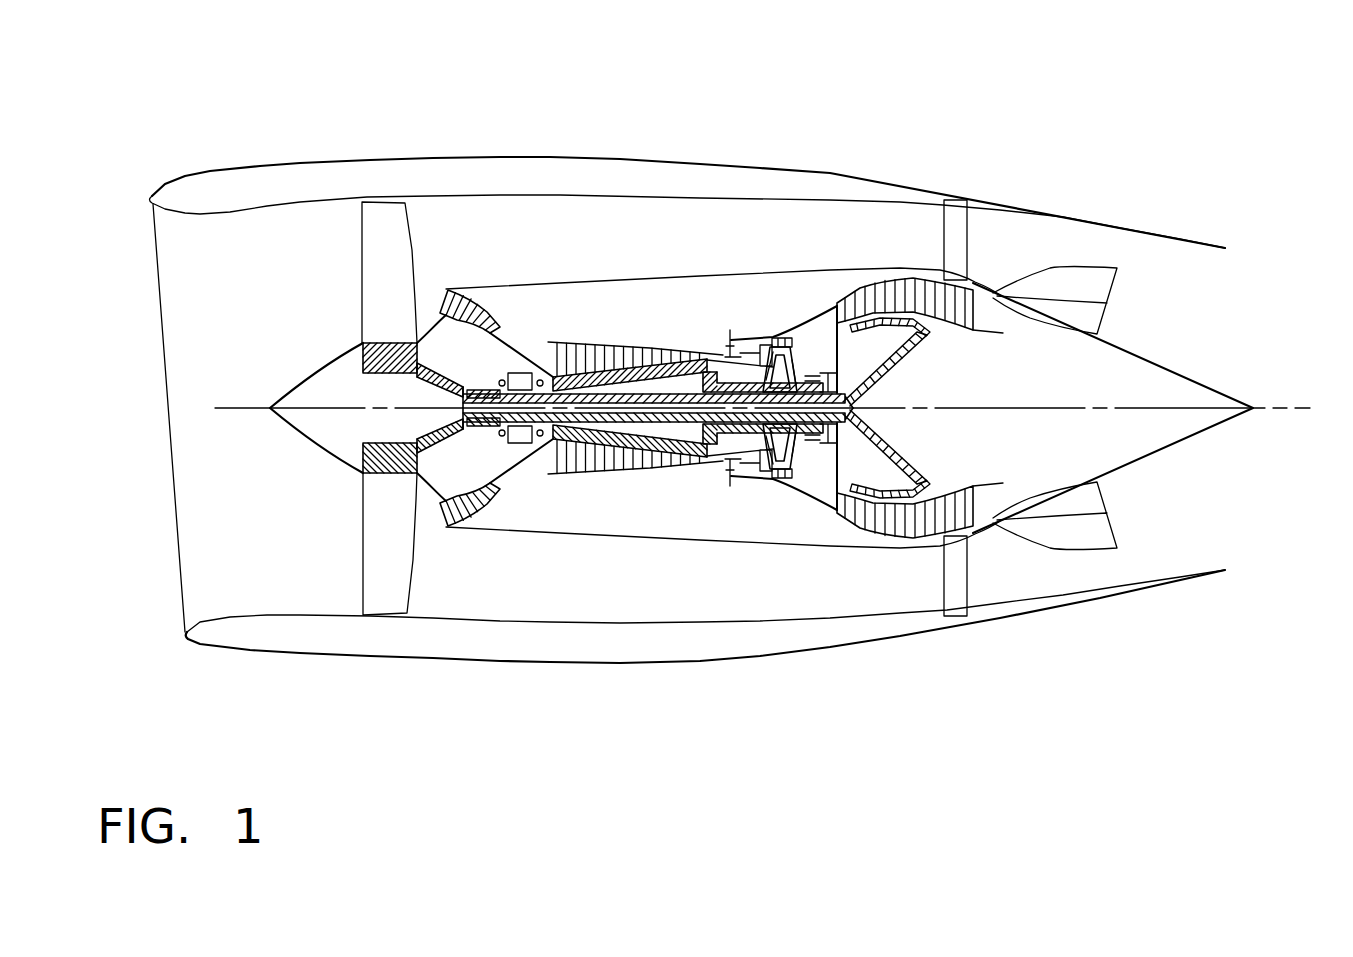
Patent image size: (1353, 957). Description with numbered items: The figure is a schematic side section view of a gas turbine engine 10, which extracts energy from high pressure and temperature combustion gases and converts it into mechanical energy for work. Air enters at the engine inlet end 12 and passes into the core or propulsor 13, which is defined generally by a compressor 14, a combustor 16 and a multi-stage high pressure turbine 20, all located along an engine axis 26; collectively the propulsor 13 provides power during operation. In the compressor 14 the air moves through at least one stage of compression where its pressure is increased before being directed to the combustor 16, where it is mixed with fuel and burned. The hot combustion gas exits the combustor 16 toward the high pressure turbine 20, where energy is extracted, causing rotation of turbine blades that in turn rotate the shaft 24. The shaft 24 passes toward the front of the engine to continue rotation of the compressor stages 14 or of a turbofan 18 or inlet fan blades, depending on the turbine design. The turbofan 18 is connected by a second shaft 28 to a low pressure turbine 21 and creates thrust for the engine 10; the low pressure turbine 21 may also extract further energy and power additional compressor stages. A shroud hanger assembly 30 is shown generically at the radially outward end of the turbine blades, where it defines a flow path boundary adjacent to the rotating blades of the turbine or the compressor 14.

The gas turbine engine 10 is at (723, 369).
The engine inlet end 12 is at (173, 248).
The core or propulsor 13 is at (688, 272).
The compressor 14 is at (592, 342).
The combustor 16 is at (750, 336).
The turbofan 18 is at (331, 258).
The high pressure turbine 20 is at (805, 317).
The low pressure turbine 21 is at (918, 340).
The shaft 24 is at (723, 432).
The engine axis 26 is at (1310, 408).
The shaft 28 is at (638, 423).
The shroud hanger assembly 30 is at (787, 328).